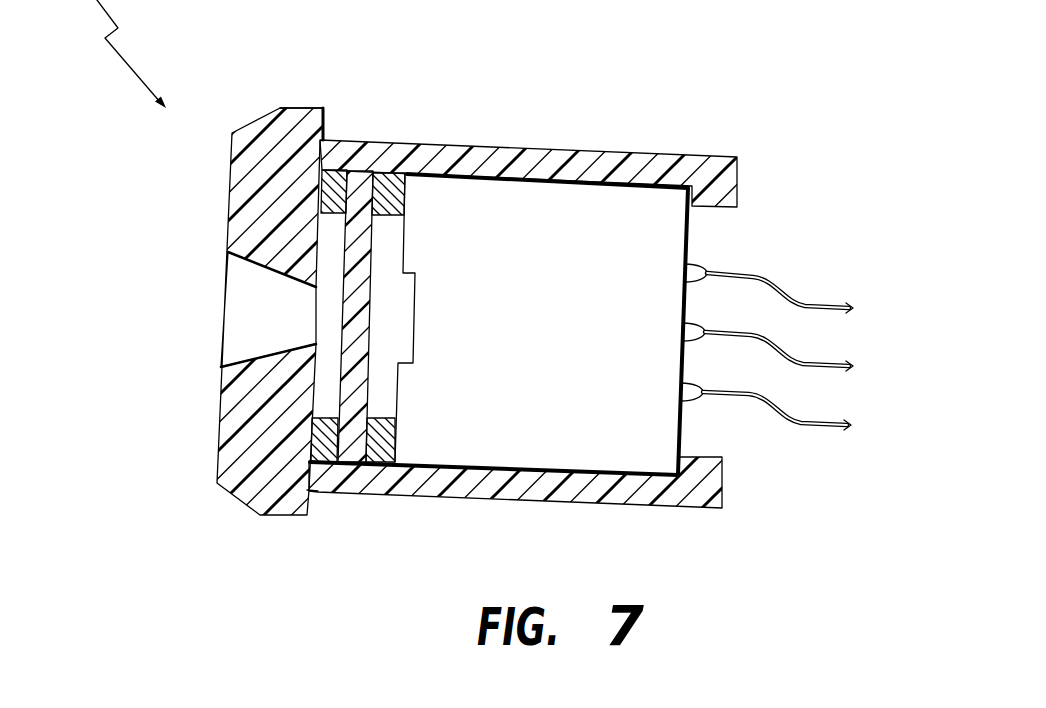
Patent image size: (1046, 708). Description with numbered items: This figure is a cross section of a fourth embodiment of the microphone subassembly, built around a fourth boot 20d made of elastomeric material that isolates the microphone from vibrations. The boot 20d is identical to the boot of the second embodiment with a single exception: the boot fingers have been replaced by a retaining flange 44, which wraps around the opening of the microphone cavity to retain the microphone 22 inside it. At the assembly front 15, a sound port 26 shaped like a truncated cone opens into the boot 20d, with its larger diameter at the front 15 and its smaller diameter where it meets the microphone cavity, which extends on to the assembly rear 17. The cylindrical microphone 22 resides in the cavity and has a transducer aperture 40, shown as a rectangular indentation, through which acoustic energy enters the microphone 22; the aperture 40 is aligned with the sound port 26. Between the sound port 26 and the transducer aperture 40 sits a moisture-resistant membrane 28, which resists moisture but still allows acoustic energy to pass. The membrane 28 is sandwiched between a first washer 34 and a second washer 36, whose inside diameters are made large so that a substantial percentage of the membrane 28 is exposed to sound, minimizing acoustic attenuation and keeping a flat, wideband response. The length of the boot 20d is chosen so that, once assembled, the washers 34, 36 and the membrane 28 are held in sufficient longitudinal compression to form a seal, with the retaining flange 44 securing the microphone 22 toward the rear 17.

The assembly front 15 is at (223, 197).
The fourth boot 20d is at (298, 110).
The sound port 26 is at (240, 322).
The membrane 28 is at (362, 183).
The first washer 34 is at (325, 447).
The second washer 36 is at (382, 447).
The transducer aperture 40 is at (405, 313).
The microphone 22 is at (597, 220).
The retaining flange 44 is at (737, 185).
The assembly rear 17 is at (683, 427).